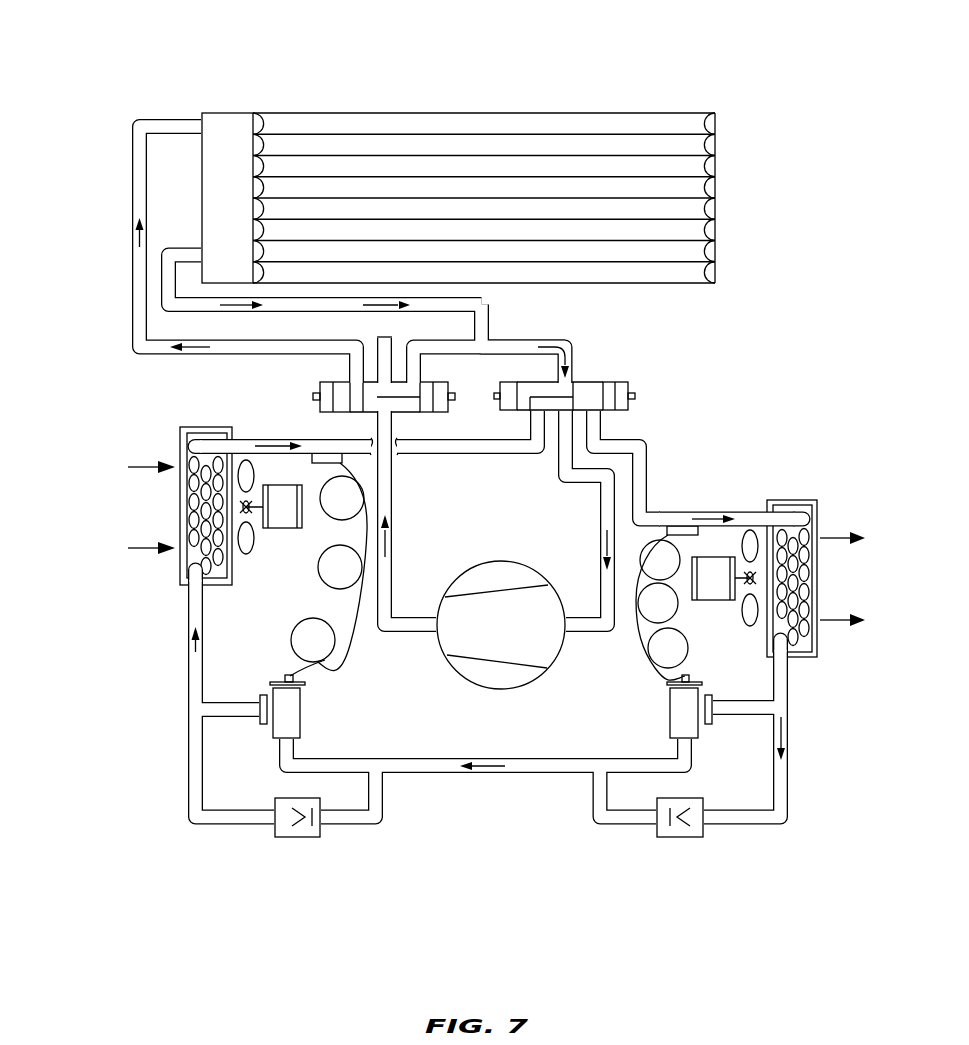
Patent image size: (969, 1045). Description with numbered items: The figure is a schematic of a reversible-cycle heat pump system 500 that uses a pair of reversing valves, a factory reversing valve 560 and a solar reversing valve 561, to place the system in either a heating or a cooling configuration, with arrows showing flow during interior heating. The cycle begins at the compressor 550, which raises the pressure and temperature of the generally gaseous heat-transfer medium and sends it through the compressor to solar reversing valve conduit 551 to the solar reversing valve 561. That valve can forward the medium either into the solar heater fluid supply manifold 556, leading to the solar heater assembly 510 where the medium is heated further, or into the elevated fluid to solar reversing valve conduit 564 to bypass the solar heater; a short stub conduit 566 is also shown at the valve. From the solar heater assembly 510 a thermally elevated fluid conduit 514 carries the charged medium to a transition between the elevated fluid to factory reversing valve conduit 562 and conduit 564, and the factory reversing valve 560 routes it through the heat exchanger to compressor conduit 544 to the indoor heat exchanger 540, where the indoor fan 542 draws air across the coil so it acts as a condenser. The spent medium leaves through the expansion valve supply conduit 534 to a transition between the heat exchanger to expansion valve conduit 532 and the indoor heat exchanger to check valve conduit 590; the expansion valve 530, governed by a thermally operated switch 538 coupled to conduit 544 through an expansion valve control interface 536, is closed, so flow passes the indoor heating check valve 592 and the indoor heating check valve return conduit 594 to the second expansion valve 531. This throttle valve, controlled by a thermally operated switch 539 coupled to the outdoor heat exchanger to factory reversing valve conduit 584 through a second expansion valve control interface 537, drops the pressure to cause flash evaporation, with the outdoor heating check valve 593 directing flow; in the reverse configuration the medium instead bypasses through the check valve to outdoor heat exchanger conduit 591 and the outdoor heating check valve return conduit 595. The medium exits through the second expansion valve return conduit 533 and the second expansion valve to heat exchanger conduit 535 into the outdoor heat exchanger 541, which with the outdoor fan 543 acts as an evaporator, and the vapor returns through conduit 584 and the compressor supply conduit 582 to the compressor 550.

The reversible-cycle heat pump system 500 is at (741, 78).
The solar heater assembly 510 is at (715, 197).
The thermally elevated fluid conduit 514 is at (162, 279).
The solar heater fluid supply manifold 556 is at (132, 243).
The elevated fluid to factory reversing valve conduit 562 is at (522, 340).
The elevated fluid to solar reversing valve conduit 564 is at (447, 340).
The conduit 566 is at (377, 354).
The factory reversing valve 560 is at (600, 382).
The solar reversing valve 561 is at (345, 405).
The outdoor heat exchanger to factory reversing valve conduit 584 is at (240, 438).
The thermally operated switch 539 is at (342, 459).
The outdoor heat exchanger 541 is at (180, 495).
The outdoor fan 543 is at (293, 530).
The compressor to solar reversing valve conduit 551 is at (392, 515).
The second expansion valve control interface 537 is at (360, 640).
The second expansion valve to heat exchanger conduit 535 is at (188, 645).
The second expansion valve return conduit 533 is at (220, 717).
The second expansion valve 531 is at (302, 703).
The check valve to outdoor heat exchanger conduit 591 is at (188, 768).
The outdoor heating check valve 593 is at (298, 838).
The outdoor heating check valve return conduit 595 is at (353, 827).
The expansion valve supply conduit 534 is at (485, 758).
The indoor heat exchanger to check valve conduit 590 is at (790, 763).
The indoor heating check valve 592 is at (678, 838).
The indoor heating check valve return conduit 594 is at (623, 823).
The expansion valve 530 is at (670, 712).
The heat exchanger to expansion valve conduit 532 is at (753, 717).
The expansion valve control interface 536 is at (640, 645).
The indoor fan 542 is at (717, 602).
The indoor heat exchanger 540 is at (817, 567).
The heat exchanger to compressor conduit 544 is at (648, 483).
The thermally operated switch 538 is at (685, 538).
The compressor supply conduit 582 is at (562, 480).
The compressor 550 is at (538, 572).